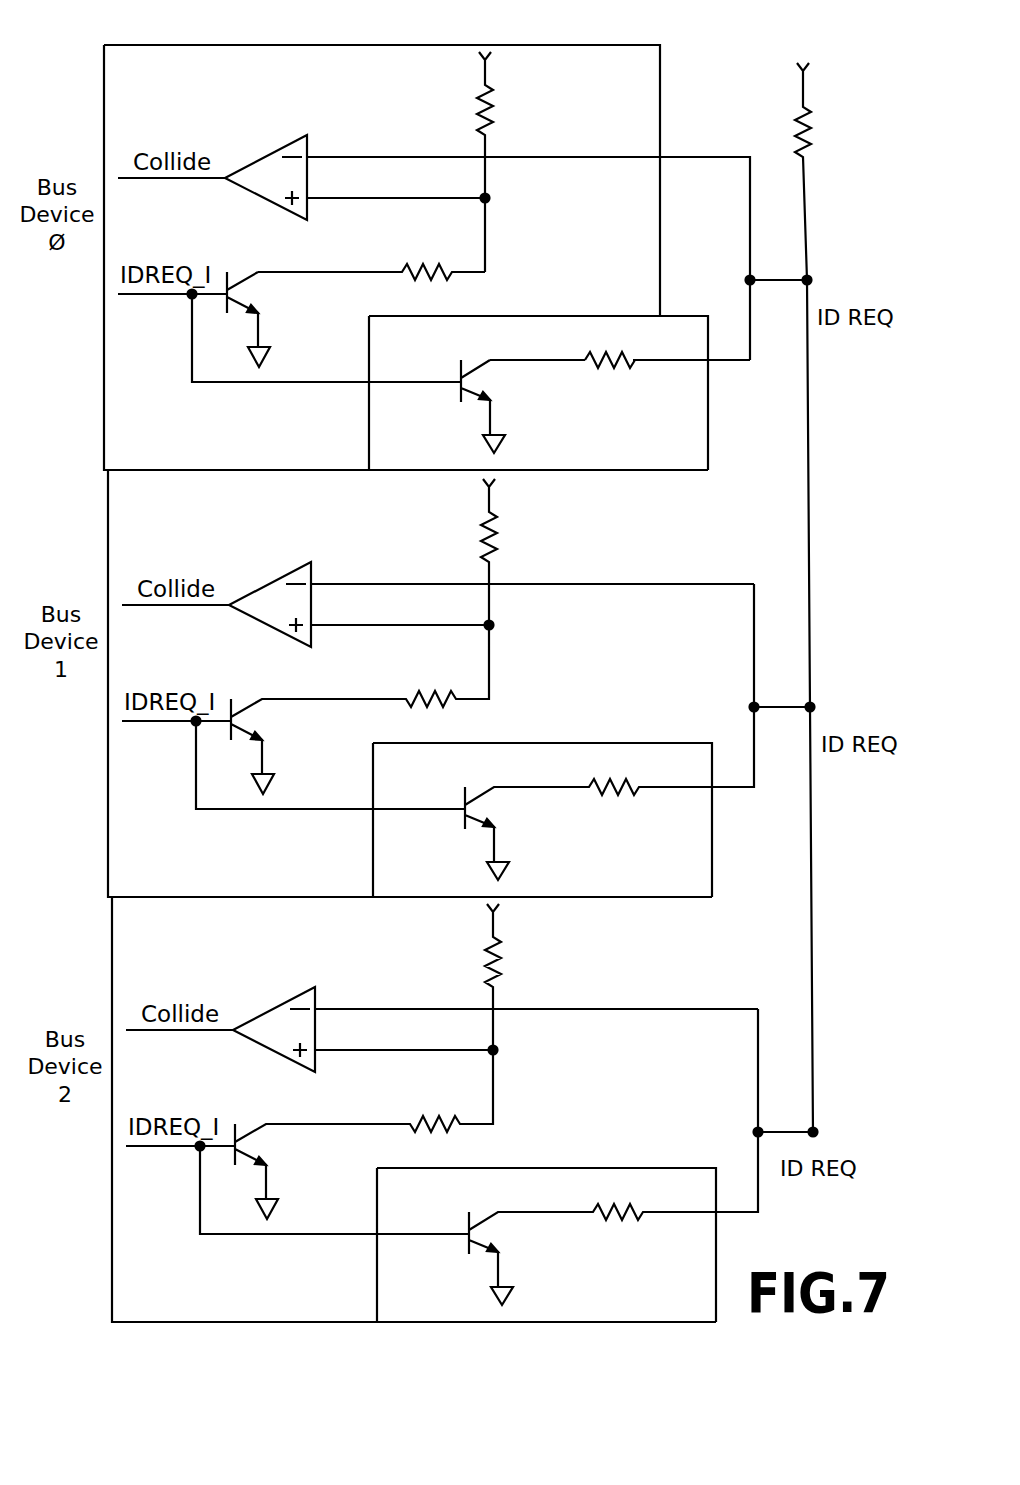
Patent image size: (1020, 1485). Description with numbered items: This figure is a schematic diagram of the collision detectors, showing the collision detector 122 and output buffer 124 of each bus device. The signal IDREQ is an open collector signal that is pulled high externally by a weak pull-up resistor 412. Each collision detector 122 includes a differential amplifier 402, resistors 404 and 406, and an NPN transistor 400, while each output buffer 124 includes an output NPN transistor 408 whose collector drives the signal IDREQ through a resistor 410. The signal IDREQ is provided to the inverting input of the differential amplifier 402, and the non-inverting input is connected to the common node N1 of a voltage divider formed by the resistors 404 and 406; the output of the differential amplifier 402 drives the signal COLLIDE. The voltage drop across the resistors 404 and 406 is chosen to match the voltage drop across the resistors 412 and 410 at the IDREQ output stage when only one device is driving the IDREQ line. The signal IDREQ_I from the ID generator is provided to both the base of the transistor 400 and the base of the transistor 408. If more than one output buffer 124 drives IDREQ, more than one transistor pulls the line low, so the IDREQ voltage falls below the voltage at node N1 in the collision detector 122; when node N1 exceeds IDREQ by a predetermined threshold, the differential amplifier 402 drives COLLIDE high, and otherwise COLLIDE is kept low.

The collision detector 122 is at (583, 44).
The output buffer 124 is at (710, 425).
The NPN transistor 400 is at (250, 295).
The differential amplifier 402 is at (307, 143).
The resistor 404 is at (421, 264).
The resistor 406 is at (495, 109).
The output NPN transistor 408 is at (468, 403).
The resistor 410 is at (615, 372).
The weak pull-up resistor 412 is at (790, 118).
The common node N1 is at (507, 225).